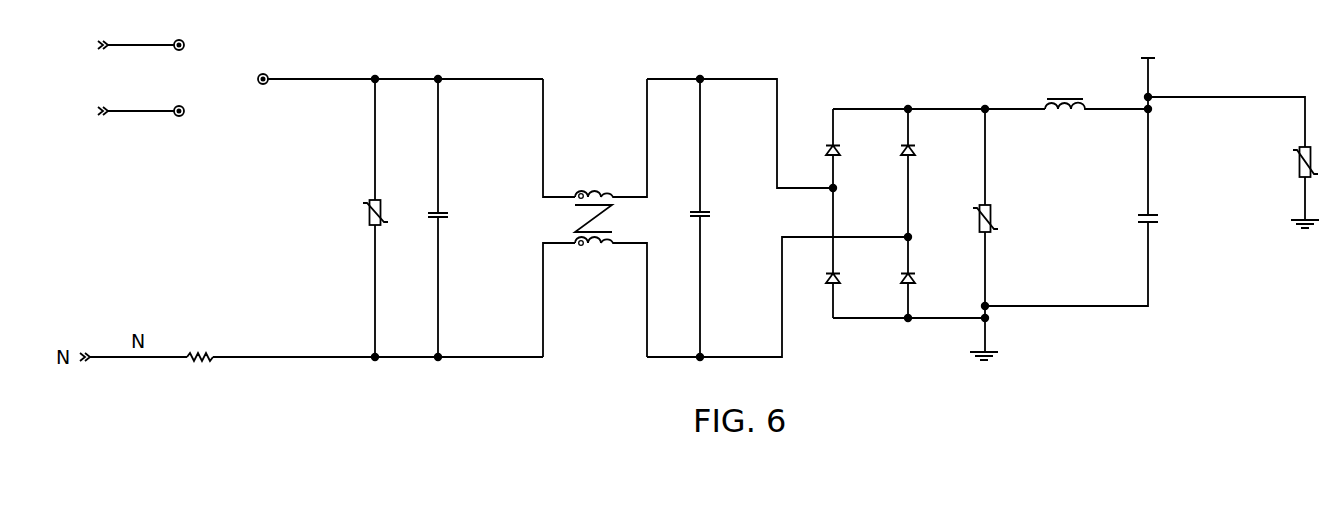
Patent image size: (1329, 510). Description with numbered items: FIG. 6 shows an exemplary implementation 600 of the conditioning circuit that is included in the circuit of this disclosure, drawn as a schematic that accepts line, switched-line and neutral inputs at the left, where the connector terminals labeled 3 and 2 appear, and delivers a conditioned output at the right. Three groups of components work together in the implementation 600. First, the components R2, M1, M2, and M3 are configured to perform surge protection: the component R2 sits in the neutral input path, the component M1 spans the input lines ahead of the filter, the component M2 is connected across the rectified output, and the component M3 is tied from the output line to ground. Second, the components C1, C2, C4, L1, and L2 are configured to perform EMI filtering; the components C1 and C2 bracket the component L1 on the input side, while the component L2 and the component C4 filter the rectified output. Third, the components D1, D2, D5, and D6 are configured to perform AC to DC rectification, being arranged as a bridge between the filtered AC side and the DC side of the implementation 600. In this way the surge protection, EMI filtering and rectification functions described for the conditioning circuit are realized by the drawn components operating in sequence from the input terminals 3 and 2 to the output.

The exemplary implementation 600 is at (845, 57).
The line-switched terminal L-S 3 is at (120, 38).
The line terminal L 2 is at (131, 104).
The surge protection component R2 is at (200, 342).
The surge protection component M1 is at (360, 218).
The EMI filtering component C1 is at (453, 218).
The EMI filtering component L1 is at (604, 218).
The EMI filtering component C2 is at (715, 218).
The rectification component D1 is at (839, 148).
The rectification component D2 is at (914, 173).
The rectification component D5 is at (839, 253).
The rectification component D6 is at (914, 277).
The surge protection component M2 is at (966, 234).
The EMI filtering component L2 is at (1096, 90).
The EMI filtering component C4 is at (1087, 182).
The surge protection component M3 is at (1233, 162).